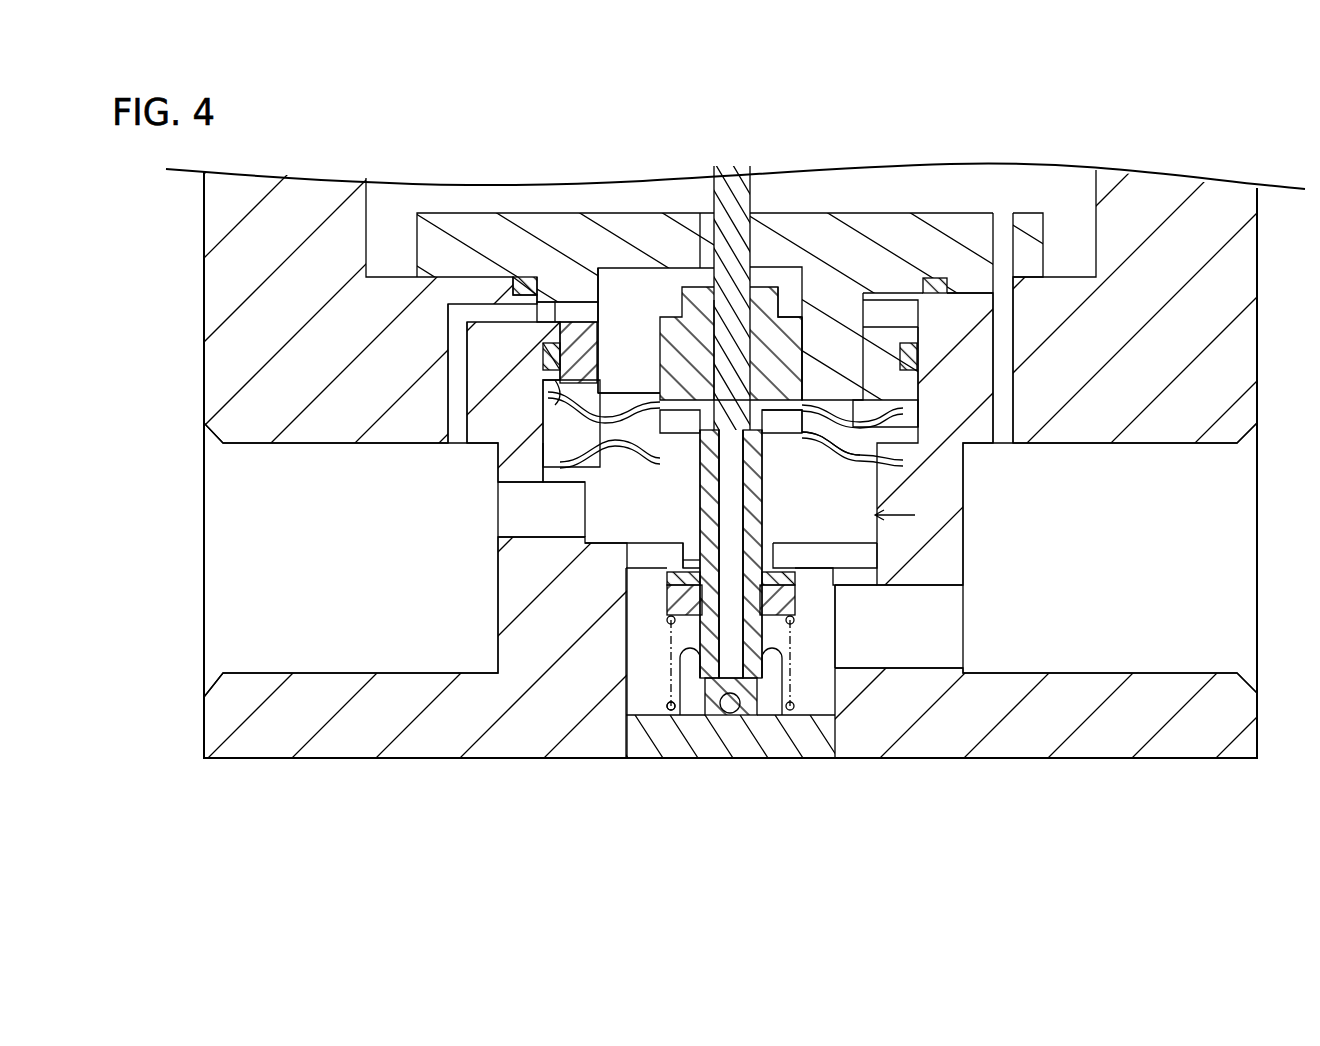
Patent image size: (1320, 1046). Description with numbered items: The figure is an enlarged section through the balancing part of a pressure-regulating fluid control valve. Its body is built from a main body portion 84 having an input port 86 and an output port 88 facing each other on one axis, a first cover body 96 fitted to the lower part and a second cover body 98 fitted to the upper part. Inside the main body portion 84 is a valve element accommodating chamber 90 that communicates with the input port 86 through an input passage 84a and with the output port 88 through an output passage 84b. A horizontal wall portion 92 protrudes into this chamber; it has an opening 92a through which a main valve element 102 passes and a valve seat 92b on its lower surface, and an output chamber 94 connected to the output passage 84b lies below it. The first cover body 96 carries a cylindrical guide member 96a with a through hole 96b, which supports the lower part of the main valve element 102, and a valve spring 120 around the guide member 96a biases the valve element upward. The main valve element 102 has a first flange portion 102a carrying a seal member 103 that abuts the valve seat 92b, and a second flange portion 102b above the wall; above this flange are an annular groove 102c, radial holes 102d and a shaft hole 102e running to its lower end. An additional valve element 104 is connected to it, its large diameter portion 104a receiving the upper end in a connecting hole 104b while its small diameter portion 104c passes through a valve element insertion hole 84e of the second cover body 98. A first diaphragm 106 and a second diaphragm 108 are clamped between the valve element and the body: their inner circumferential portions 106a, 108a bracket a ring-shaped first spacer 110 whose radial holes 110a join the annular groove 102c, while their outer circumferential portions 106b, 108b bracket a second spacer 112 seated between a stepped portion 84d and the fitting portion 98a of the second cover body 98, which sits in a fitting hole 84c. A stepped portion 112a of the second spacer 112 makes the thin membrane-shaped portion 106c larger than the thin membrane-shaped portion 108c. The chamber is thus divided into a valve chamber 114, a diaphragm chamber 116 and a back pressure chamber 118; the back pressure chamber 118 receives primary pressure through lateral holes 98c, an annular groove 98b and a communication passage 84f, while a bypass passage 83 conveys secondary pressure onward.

The bypass passage 83 is at (1003, 215).
The main body portion 84 is at (203, 265).
The input passage 84a is at (525, 526).
The output passage 84b is at (940, 640).
The fitting hole 84c is at (548, 346).
The stepped portion 84d is at (563, 483).
The valve element insertion hole 84e is at (714, 215).
The communication passage 84f is at (457, 378).
The input port 86 is at (225, 603).
The output port 88 is at (1215, 570).
The valve element accommodating chamber 90 is at (908, 508).
The horizontal wall portion 92 is at (640, 556).
The opening 92a is at (690, 555).
The valve seat 92b is at (672, 567).
The output chamber 94 is at (825, 730).
The first cover body 96 is at (668, 755).
The guide member 96a is at (690, 660).
The through hole 96b is at (730, 715).
The second cover body 98 is at (472, 230).
The fitting portion 98a is at (580, 350).
The annular groove 98b is at (540, 285).
The lateral holes 98c is at (570, 305).
The main valve element 102 is at (765, 530).
The first flange portion 102a is at (775, 603).
The second flange portion 102b is at (845, 440).
The annular groove 102c is at (735, 390).
The radial holes 102d is at (735, 400).
The shaft hole 102e is at (730, 628).
The seal member 103 is at (668, 580).
The additional valve element 104 is at (790, 285).
The large diameter portion 104a is at (782, 332).
The connecting hole 104b is at (790, 358).
The small diameter portion 104c is at (722, 188).
The first diaphragm 106 is at (915, 458).
The inner circumferential portion 106a is at (776, 470).
The outer circumferential portion 106b is at (925, 455).
The thin membrane-shaped portion 106c is at (850, 450).
The second diaphragm 108 is at (922, 383).
The inner circumferential portion 108a is at (755, 388).
The outer circumferential portion 108b is at (920, 350).
The thin membrane-shaped portion 108c is at (880, 378).
The first spacer 110 is at (640, 465).
The radial holes 110a is at (640, 448).
The second spacer 112 is at (565, 420).
The stepped portion 112a is at (612, 420).
The valve chamber 114 is at (838, 545).
The diaphragm chamber 116 is at (910, 420).
The back pressure chamber 118 is at (830, 285).
The valve spring 120 is at (668, 704).